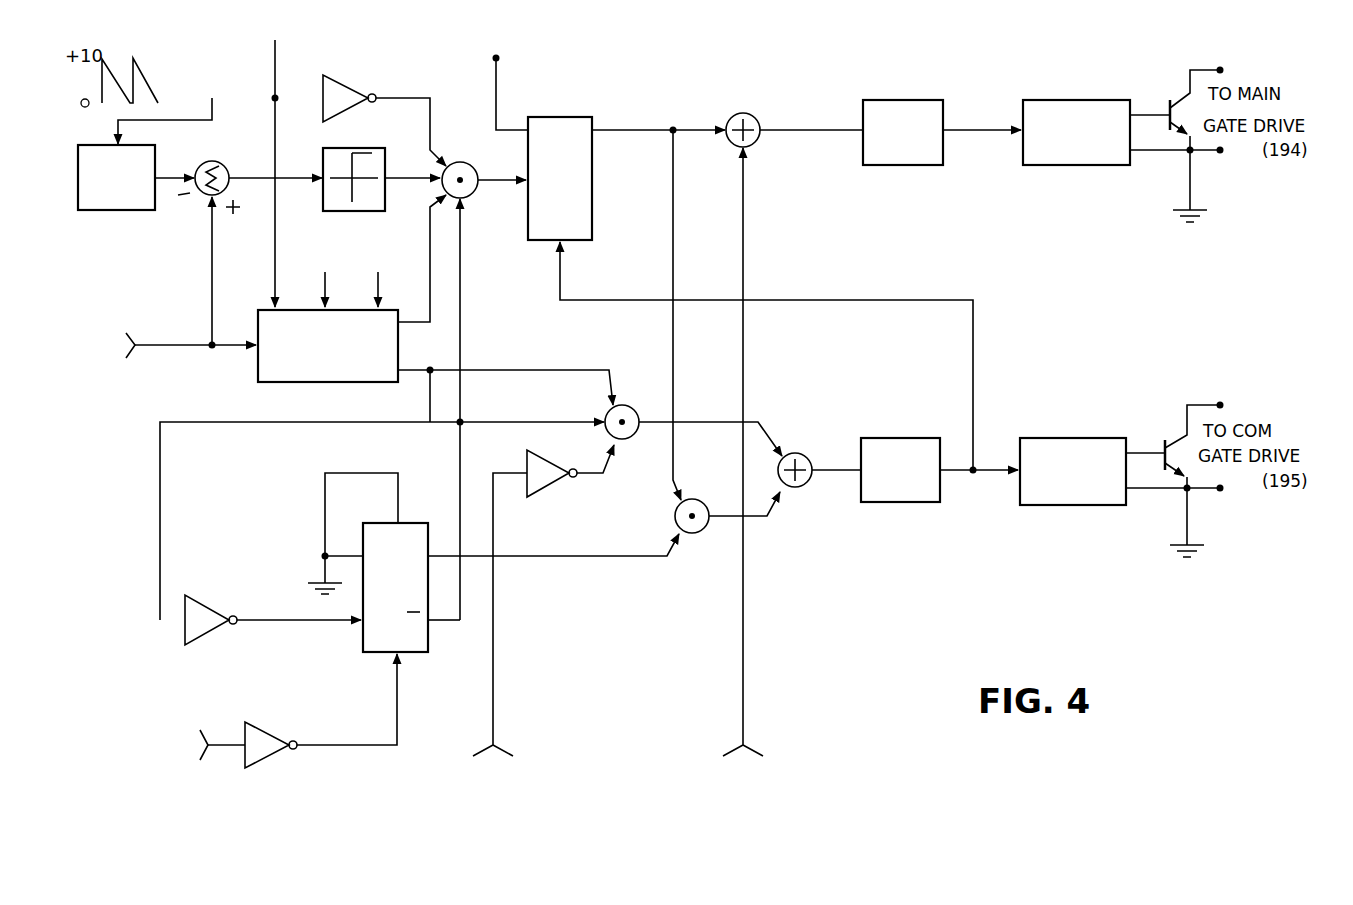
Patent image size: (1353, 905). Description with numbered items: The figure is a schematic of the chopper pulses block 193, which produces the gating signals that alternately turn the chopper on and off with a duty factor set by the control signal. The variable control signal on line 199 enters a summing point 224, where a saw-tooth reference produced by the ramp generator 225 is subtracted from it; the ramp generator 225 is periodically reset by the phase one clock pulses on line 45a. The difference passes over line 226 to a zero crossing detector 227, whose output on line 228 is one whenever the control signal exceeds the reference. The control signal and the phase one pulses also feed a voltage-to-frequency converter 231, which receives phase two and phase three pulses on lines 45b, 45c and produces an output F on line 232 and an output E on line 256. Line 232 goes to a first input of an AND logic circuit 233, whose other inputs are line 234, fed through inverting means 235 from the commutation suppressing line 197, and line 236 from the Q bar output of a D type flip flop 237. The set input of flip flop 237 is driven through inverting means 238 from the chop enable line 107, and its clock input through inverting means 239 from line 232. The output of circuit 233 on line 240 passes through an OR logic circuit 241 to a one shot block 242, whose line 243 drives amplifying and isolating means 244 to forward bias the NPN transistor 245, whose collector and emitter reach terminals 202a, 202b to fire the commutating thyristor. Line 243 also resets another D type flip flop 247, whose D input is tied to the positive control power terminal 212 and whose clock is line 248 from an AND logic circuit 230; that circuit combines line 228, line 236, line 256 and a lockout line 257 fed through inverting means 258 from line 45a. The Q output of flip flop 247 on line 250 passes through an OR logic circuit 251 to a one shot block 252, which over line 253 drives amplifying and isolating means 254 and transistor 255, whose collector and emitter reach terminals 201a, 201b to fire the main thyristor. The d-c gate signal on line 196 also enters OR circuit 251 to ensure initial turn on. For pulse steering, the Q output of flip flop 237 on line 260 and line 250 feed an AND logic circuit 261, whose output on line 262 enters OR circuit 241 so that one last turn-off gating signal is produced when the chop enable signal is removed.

The phase 1 clock line 45a is at (272, 78).
The phase 2 clock line 45b is at (324, 298).
The phase 3 clock line 45c is at (377, 298).
The chop enable line 107 is at (224, 750).
The chopper pulses block 193 is at (920, 597).
The d-c gate signal line 196 is at (746, 706).
The commutation suppressing signal line 197 is at (495, 675).
The control signal line 199 is at (170, 342).
The first gating signal terminal 201a is at (1226, 62).
The first gating signal terminal 201b is at (1225, 155).
The second gating signal terminal 202a is at (1224, 404).
The second gating signal terminal 202b is at (1225, 493).
The positive control power terminal 212 is at (506, 62).
The summing point 224 is at (205, 164).
The ramp generator 225 is at (116, 213).
The difference signal line 226 is at (256, 179).
The zero crossing detector 227 is at (332, 143).
The zero crossing detector output line 228 is at (405, 175).
The AND logic circuit 230 is at (472, 164).
The voltage-to-frequency converter 231 is at (256, 377).
The V/F converter output line 232 is at (410, 376).
The AND logic circuit 233 is at (637, 404).
The inverted commutation suppressing line 234 is at (613, 478).
The inverting means 235 is at (550, 490).
The Q bar output line 236 is at (458, 452).
The D type flip flop 237 is at (374, 516).
The inverting means 238 is at (276, 730).
The inverting means 239 is at (228, 593).
The AND circuit output line 240 is at (760, 420).
The OR logic circuit 241 is at (806, 452).
The one shot block 242 is at (904, 434).
The one shot output line 243 is at (958, 476).
The amplifying and isolating means 244 is at (1094, 436).
The NPN transistor 245 is at (1176, 428).
The D type flip flop 247 is at (574, 114).
The AND circuit output line 248 is at (498, 186).
The Q output line 250 is at (637, 128).
The OR logic circuit 251 is at (750, 112).
The one shot block 252 is at (905, 98).
The one shot output line 253 is at (980, 126).
The amplifying and isolating means 254 is at (1086, 98).
The transistor 255 is at (1176, 89).
The E output line 256 is at (430, 240).
The lockout line 257 is at (430, 96).
The inverting means 258 is at (343, 73).
The Q output line 260 is at (608, 558).
The AND logic circuit 261 is at (703, 498).
The AND circuit output line 262 is at (770, 519).